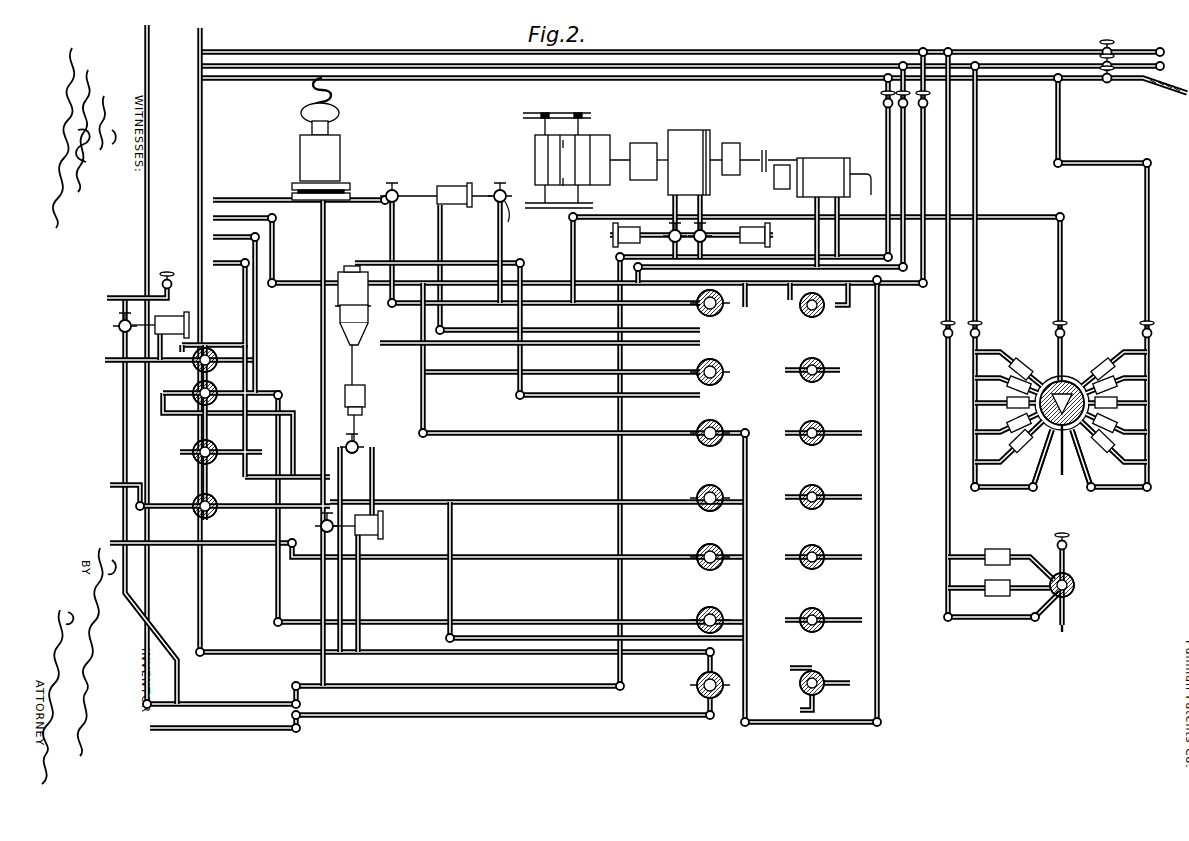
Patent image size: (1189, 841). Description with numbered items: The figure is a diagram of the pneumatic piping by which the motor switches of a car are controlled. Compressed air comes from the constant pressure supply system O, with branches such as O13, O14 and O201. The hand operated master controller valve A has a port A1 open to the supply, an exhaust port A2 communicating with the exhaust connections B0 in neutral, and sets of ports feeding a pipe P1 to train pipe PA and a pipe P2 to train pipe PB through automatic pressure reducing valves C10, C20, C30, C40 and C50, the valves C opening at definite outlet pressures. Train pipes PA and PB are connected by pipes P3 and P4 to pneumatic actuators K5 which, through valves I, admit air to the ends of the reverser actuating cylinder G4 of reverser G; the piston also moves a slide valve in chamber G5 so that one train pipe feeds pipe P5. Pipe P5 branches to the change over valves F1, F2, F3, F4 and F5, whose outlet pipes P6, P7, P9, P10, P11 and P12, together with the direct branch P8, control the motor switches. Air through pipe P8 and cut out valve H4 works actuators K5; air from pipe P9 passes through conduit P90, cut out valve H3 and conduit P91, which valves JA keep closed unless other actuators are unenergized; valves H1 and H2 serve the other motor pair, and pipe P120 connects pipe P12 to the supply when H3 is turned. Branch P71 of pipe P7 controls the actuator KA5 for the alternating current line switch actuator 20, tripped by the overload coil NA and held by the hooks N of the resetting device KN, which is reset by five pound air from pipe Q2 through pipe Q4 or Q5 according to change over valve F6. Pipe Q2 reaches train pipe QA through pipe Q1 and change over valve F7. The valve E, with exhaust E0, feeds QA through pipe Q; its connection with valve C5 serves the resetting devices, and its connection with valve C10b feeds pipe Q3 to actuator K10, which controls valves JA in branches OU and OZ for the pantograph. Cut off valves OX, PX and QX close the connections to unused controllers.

The train pipe QA is at (692, 52).
The train pipe PA is at (762, 66).
The train pipe PB is at (818, 78).
The outlet pipe P7 is at (201, 44).
The constant air pressure supply system O is at (147, 48).
The pipe Q2 is at (275, 221).
The pipe Q1 is at (926, 186).
The pipe P3 is at (903, 128).
The pipe P4 is at (888, 160).
The pipe Q is at (948, 302).
The pipe P1 is at (976, 278).
The pipe P2 is at (1145, 268).
The supply system branch pipe O13 is at (112, 298).
The supply system branch pipe O14 is at (166, 282).
The pipe Q4 is at (266, 200).
The pipe Q3 is at (440, 236).
The pipe Q5 is at (400, 262).
The outlet pipe P12 is at (462, 434).
The outlet pipe P11 is at (518, 502).
The outlet pipe P10 is at (248, 538).
The outlet pipe P9 is at (268, 392).
The branch pipe P8 is at (452, 590).
The outlet pipe P6 is at (262, 729).
The pipe P5 is at (828, 724).
The conduit P91 is at (160, 362).
The conduit P90 is at (293, 432).
The pipe P120 is at (280, 476).
The branch pipe P71 is at (360, 600).
The pipe O201 is at (342, 484).
The line switch actuator 20 is at (321, 139).
The valve JA is at (385, 192).
The supply system branch OU is at (400, 188).
The actuator K10 is at (448, 186).
The supply system branch OZ is at (500, 186).
The reverser G is at (595, 160).
The reverser actuating cylinder G4 is at (686, 130).
The valve chamber G5 is at (834, 167).
The pneumatic valve actuator K5 is at (166, 316).
The valve I is at (118, 330).
The actuator KA5 is at (372, 538).
The resetting device KN is at (336, 280).
The hooks N is at (340, 334).
The overload coil NA is at (366, 398).
The motor cut out valve H1 is at (212, 346).
The motor cut out valve H2 is at (210, 406).
The motor cut out valve H3 is at (190, 452).
The motor cut out valve H4 is at (192, 502).
The change over valve F7 is at (728, 316).
The change over valve F6 is at (728, 372).
The change over valve F5 is at (722, 424).
The change over valve F4 is at (702, 490).
The change over valve F3 is at (702, 550).
The change over valve F2 is at (702, 612).
The change over valve F1 is at (698, 686).
The cut off valve QX is at (940, 332).
The cut off valve PX is at (982, 330).
The cut off valve OX is at (1066, 330).
The master controller valve body A is at (1076, 386).
The port A1 is at (1050, 384).
The exhaust port and connections B0 is at (1060, 478).
The exhaust port A2 is at (1084, 470).
The automatic pressure reducing valve C10 is at (975, 354).
The automatic pressure reducing valve C20 is at (975, 380).
The automatic pressure reducing valve C30 is at (975, 405).
The automatic pressure reducing valve C40 is at (975, 434).
The automatic pressure reducing valve C50 is at (975, 464).
The pressure reducing valve C is at (975, 486).
The pressure reducing valve C5 is at (1000, 550).
The pressure reducing valve C10b is at (1000, 596).
The valve E is at (1078, 592).
The exhaust connection E0 is at (1064, 628).